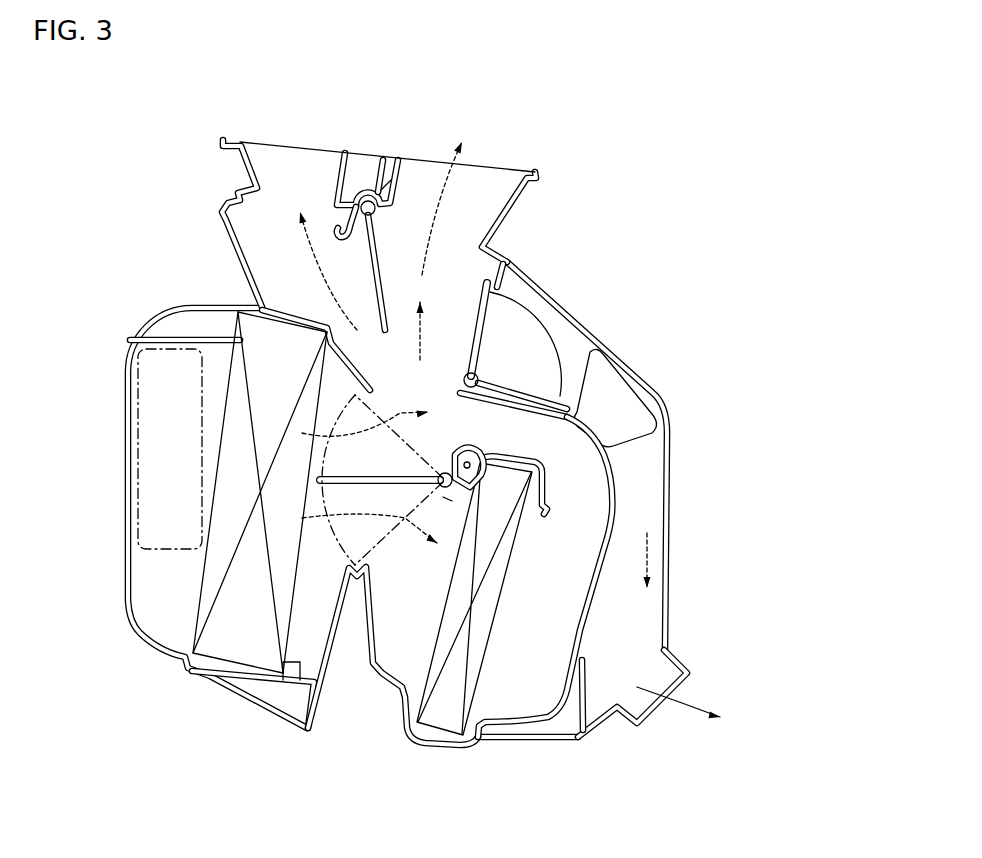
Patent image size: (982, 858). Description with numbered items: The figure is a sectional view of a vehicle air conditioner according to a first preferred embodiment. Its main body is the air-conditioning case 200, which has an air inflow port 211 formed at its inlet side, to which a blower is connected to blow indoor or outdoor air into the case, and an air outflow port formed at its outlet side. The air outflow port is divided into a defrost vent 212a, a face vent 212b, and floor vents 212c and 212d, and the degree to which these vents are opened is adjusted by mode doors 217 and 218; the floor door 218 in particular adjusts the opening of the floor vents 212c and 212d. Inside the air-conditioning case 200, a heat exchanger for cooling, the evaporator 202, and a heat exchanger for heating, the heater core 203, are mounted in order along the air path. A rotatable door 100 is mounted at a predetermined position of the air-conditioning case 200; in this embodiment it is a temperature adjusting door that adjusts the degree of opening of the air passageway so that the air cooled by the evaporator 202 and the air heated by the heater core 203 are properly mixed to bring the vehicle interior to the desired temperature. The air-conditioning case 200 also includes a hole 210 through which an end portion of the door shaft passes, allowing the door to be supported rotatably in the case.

The door 100 is at (342, 483).
The air-conditioning case 200 is at (672, 288).
The evaporator 202 is at (246, 656).
The heater core 203 is at (437, 720).
The hole 210 is at (683, 480).
The air inflow port 211 is at (167, 557).
The defrost vent 212a is at (292, 156).
The face vent 212b is at (480, 172).
The floor vent 212c is at (640, 437).
The floor vent 212d is at (660, 690).
The mode door 217 is at (382, 265).
The floor door 218 is at (516, 350).